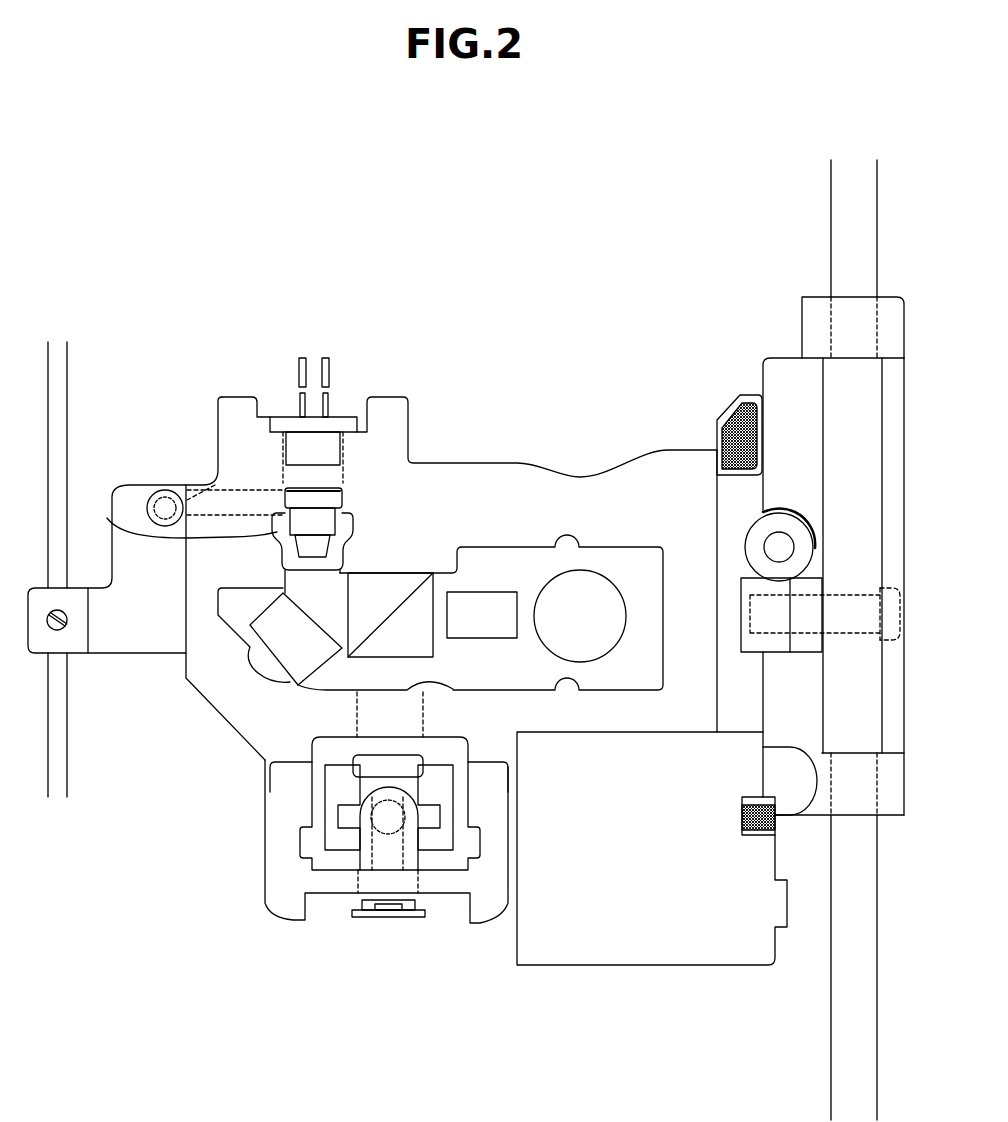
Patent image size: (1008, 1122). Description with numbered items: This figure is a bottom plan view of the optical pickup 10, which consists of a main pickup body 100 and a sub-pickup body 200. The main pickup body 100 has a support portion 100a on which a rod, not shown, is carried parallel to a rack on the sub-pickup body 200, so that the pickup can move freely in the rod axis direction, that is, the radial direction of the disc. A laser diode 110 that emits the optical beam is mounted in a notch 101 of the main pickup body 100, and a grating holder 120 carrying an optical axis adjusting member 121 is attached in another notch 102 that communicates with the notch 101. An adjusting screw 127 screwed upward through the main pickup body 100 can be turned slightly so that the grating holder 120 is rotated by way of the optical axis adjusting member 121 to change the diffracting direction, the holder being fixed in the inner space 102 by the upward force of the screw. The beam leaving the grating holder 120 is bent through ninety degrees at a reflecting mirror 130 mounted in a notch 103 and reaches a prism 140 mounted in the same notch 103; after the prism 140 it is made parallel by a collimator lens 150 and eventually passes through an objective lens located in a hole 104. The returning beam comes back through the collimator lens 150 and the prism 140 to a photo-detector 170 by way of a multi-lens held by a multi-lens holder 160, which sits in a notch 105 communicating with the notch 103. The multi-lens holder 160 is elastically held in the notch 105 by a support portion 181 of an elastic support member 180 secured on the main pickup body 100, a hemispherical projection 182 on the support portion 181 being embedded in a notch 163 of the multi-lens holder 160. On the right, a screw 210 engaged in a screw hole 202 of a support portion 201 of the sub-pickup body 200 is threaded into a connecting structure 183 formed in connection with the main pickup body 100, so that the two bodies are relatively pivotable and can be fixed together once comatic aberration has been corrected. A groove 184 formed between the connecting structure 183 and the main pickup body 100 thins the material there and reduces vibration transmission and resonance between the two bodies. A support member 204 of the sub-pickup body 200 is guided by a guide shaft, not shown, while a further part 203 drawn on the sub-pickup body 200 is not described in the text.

The optical pickup 10 is at (492, 393).
The main pickup body 100 is at (233, 410).
The support portion 100a is at (77, 645).
The notch 101 is at (283, 467).
The notch 102 is at (174, 521).
The notch 103 is at (453, 688).
The hole 104 is at (623, 607).
The notch 105 is at (433, 787).
The laser diode 110 is at (328, 447).
The grating holder 120 is at (353, 530).
The optical axis adjusting member 121 is at (227, 503).
The adjusting screw 127 is at (147, 503).
The reflecting mirror 130 is at (287, 637).
The prism 140 is at (402, 593).
The collimator lens 150 is at (483, 602).
The multi-lens holder 160 is at (332, 782).
The notch 163 is at (397, 778).
The photo-detector 170 is at (362, 920).
The elastic support member 180 is at (280, 873).
The support portion 181 is at (365, 840).
The hemispherical projection 182 is at (360, 820).
The connecting structure 183 is at (750, 588).
The groove 184 is at (727, 498).
The sub pickup body 200 is at (790, 373).
The support portion 201 is at (793, 640).
The screw hole 202 is at (818, 603).
The guide shaft 203 is at (875, 332).
The support member 204 is at (808, 327).
The screw 210 is at (877, 622).